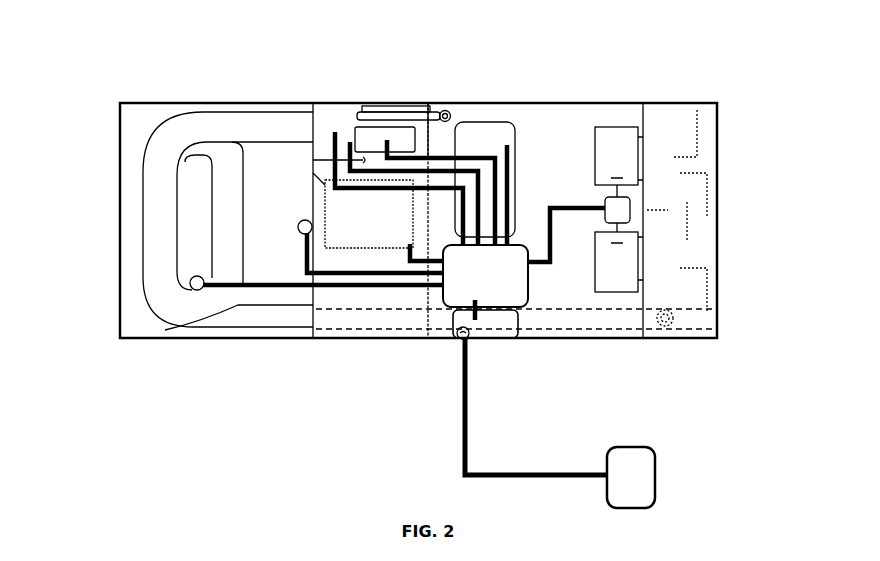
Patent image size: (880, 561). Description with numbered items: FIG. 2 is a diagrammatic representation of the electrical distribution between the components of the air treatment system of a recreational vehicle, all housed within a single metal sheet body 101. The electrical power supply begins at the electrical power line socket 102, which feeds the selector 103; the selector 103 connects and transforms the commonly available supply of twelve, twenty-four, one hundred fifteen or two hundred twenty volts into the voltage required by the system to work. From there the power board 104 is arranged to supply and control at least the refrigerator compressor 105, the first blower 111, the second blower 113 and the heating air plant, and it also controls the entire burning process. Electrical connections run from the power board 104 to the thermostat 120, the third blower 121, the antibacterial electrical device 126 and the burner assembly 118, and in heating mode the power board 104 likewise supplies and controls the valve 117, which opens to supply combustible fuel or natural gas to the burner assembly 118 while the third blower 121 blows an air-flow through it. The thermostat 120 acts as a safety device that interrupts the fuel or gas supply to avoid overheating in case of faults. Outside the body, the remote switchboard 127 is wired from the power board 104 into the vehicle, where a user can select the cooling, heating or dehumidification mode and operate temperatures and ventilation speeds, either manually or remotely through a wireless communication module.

The single metal sheet body 101 is at (117, 128).
The electrical power line socket 102 is at (458, 340).
The selector 103 is at (485, 323).
The power board 104 is at (513, 272).
The refrigerator compressor 105 is at (465, 135).
The first blower 111 is at (617, 272).
The second blower 113 is at (370, 237).
The valve 117 is at (343, 113).
The burner assembly 118 is at (323, 113).
The thermostat 120 is at (197, 291).
The third blower 121 is at (398, 135).
The antibacterial electrical device 126 is at (302, 236).
The remote switchboard 127 is at (640, 493).